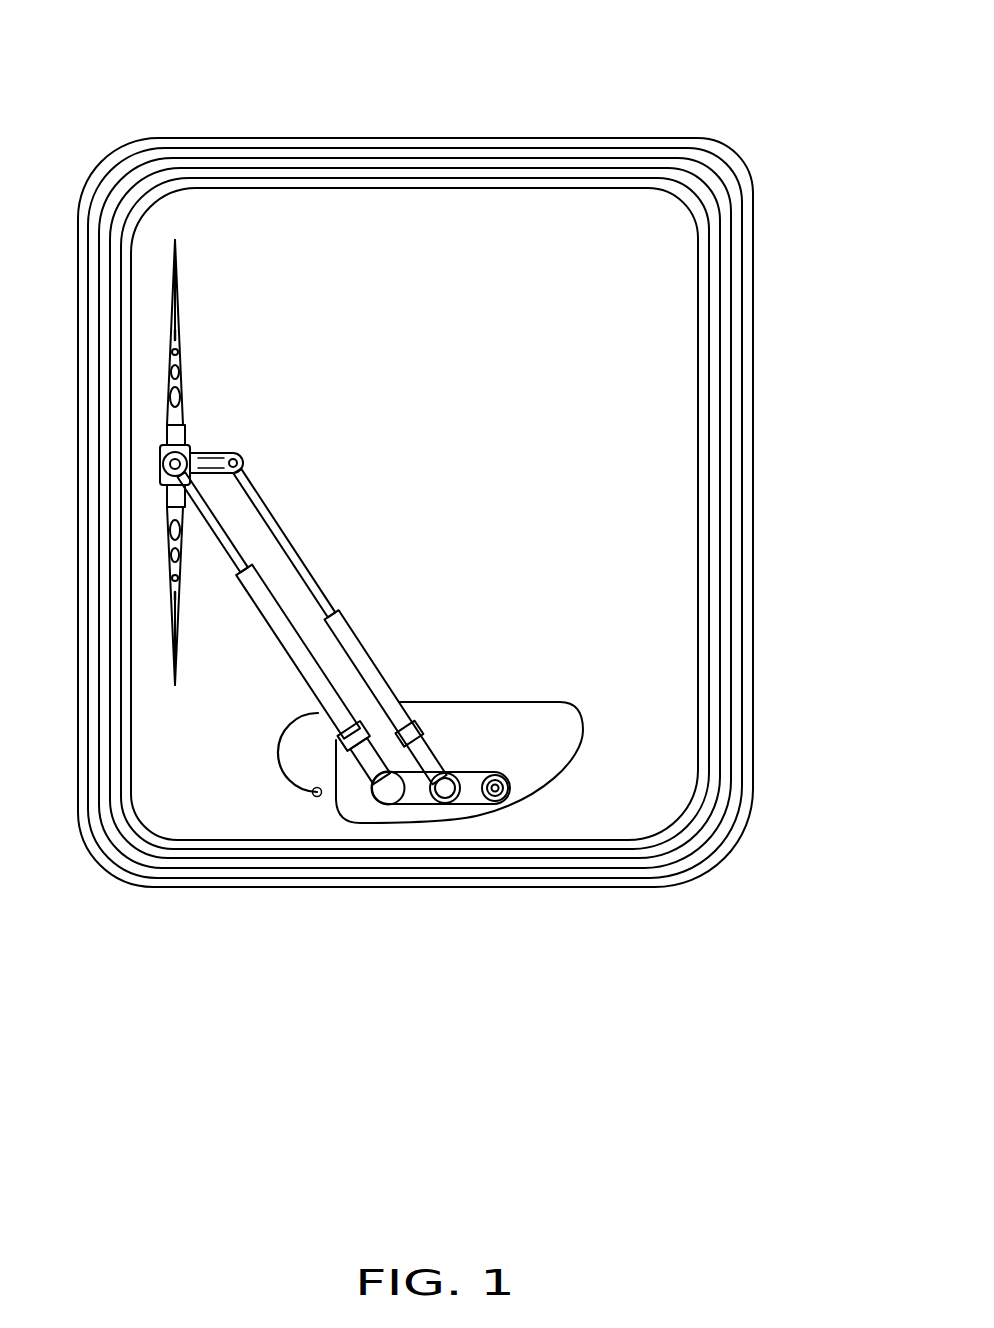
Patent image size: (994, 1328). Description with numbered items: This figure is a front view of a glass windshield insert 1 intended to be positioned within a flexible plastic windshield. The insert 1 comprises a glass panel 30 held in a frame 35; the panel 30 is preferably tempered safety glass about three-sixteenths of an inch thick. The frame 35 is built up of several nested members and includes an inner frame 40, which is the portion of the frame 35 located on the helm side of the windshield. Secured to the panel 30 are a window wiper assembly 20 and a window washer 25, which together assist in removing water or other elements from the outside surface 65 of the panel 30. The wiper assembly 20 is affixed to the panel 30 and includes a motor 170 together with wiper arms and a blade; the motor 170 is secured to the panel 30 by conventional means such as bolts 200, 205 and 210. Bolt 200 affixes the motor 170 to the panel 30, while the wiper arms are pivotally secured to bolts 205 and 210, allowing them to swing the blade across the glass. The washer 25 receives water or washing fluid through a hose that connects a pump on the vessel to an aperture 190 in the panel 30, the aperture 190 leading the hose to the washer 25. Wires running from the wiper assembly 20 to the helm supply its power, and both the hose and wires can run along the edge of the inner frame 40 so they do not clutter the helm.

The glass windshield insert 1 is at (530, 103).
The window wiper assembly 20 is at (597, 800).
The window washer 25 is at (273, 770).
The glass panel 30 is at (637, 297).
The frame 35 is at (685, 135).
The inner frame 40 is at (720, 462).
The outside surface 65 is at (290, 220).
The motor 170 is at (495, 700).
The aperture 190 is at (316, 798).
The bolt 200 is at (497, 801).
The bolt 205 is at (443, 803).
The bolt 210 is at (390, 805).